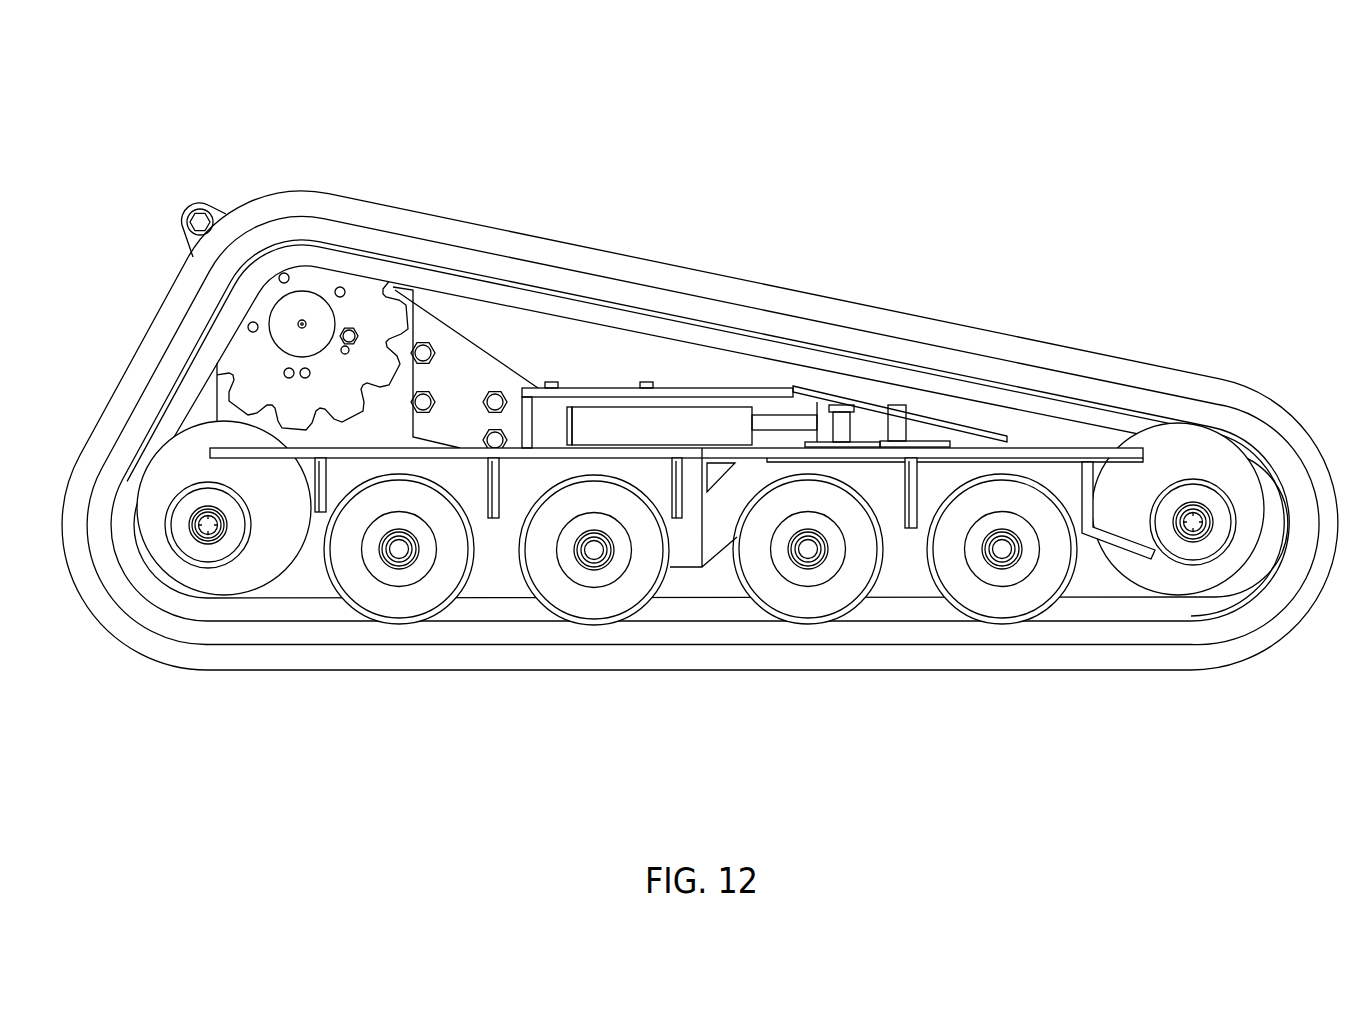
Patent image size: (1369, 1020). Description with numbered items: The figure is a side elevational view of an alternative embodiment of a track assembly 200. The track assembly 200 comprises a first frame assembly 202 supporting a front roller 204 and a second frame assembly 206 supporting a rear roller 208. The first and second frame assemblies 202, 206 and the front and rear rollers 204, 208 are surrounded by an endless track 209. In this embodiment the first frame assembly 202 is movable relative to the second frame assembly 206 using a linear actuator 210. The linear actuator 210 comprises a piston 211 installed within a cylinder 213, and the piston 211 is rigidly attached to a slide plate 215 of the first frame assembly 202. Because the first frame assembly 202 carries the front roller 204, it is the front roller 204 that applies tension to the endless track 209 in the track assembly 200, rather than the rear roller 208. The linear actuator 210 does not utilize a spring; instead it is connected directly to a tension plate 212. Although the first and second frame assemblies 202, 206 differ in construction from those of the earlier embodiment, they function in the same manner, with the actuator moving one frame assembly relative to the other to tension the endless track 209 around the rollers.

The track assembly 200 is at (738, 125).
The first frame assembly 202 is at (979, 405).
The front roller 204 is at (1160, 460).
The second frame assembly 206 is at (490, 522).
The rear roller 208 is at (235, 580).
The endless track 209 is at (262, 195).
The linear actuator 210 is at (740, 393).
The piston 211 is at (795, 425).
The tension plate 212 is at (515, 400).
The cylinder 213 is at (630, 420).
The slide plate 215 is at (800, 455).